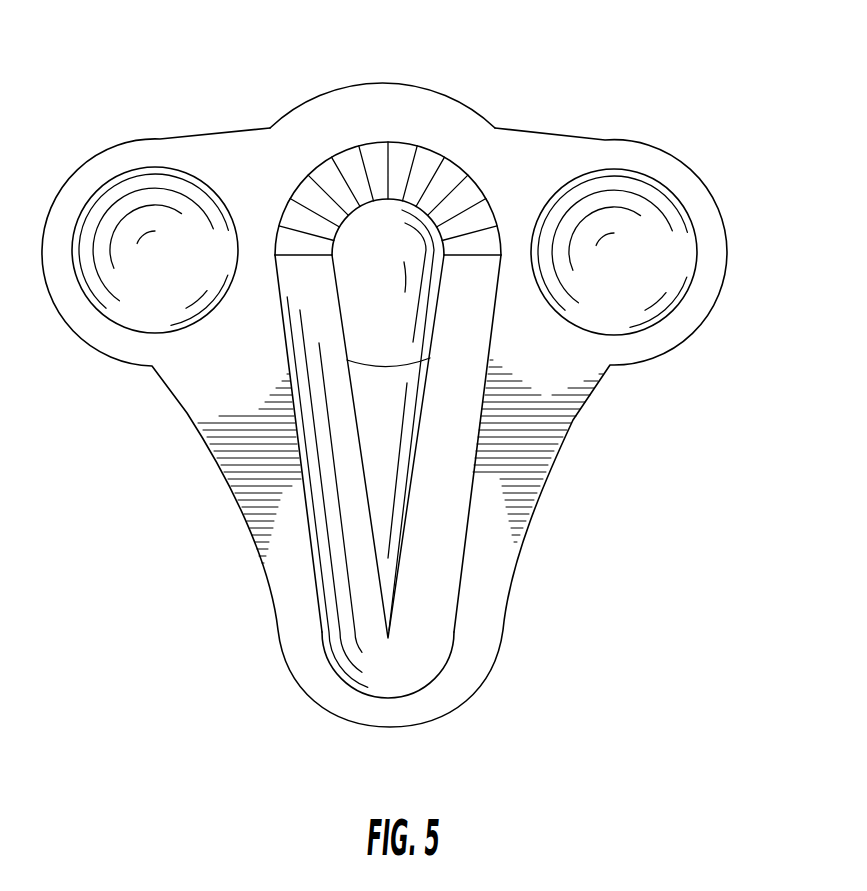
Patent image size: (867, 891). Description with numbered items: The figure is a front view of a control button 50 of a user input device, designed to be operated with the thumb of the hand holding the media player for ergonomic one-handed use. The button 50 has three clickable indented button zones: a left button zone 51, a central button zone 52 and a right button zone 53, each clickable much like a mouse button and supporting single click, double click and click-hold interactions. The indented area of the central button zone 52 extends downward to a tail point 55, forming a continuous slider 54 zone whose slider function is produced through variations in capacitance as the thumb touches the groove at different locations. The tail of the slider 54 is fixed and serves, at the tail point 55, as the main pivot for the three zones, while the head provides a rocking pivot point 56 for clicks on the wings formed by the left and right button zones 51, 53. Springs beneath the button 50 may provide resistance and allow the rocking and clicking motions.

The button 50 is at (220, 132).
The left button zone 51 is at (137, 252).
The central button zone 52 is at (388, 247).
The right button zone 53 is at (632, 253).
The slider 54 is at (372, 437).
The tail point 55 is at (388, 638).
The rocking pivot point 56 is at (371, 83).